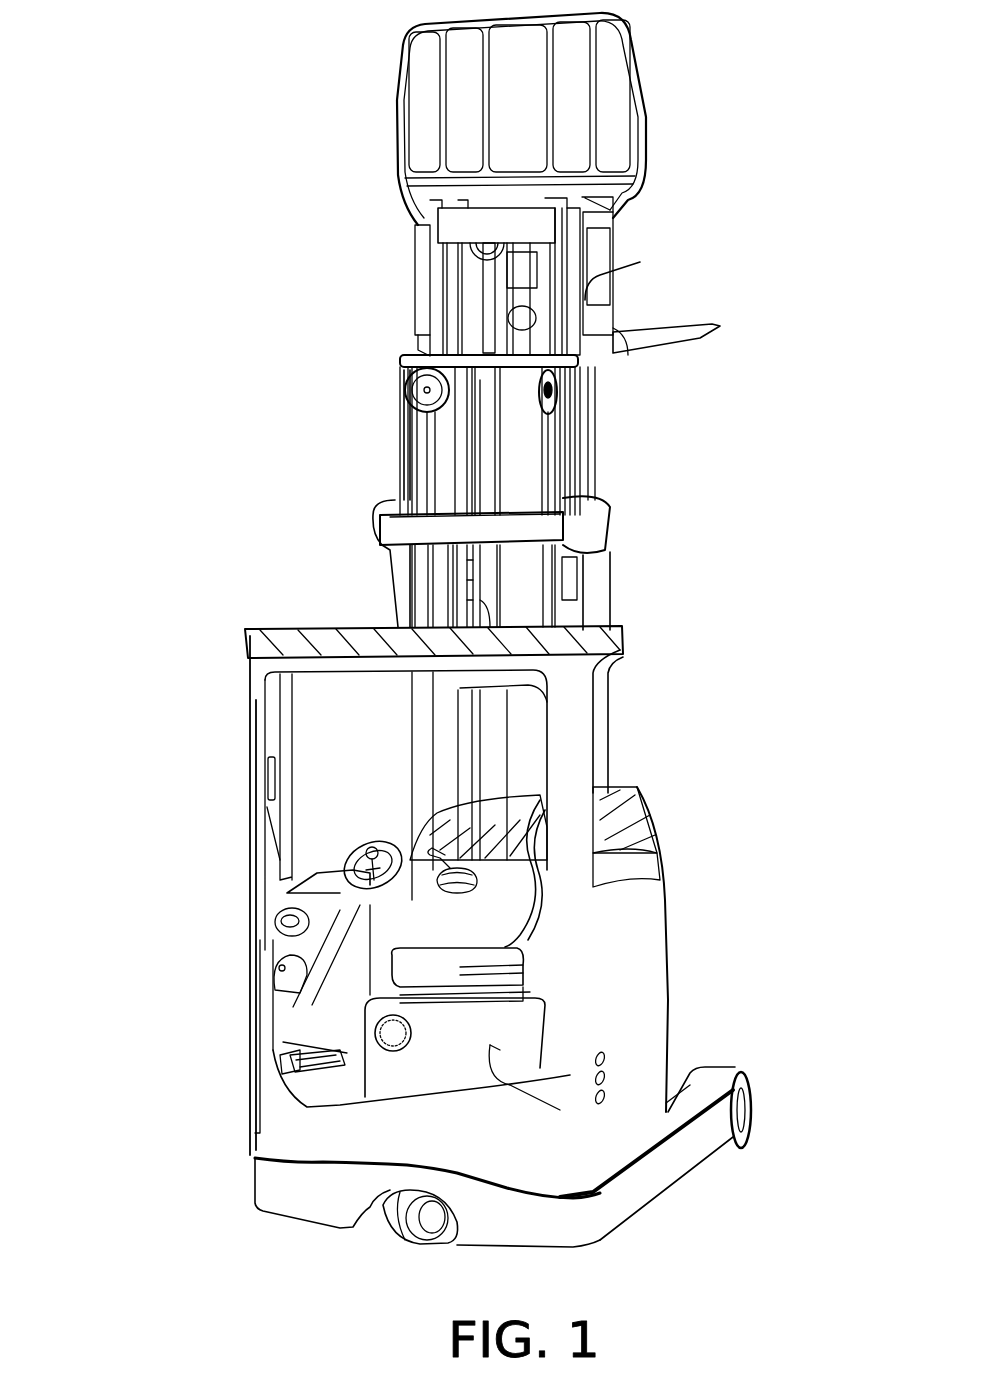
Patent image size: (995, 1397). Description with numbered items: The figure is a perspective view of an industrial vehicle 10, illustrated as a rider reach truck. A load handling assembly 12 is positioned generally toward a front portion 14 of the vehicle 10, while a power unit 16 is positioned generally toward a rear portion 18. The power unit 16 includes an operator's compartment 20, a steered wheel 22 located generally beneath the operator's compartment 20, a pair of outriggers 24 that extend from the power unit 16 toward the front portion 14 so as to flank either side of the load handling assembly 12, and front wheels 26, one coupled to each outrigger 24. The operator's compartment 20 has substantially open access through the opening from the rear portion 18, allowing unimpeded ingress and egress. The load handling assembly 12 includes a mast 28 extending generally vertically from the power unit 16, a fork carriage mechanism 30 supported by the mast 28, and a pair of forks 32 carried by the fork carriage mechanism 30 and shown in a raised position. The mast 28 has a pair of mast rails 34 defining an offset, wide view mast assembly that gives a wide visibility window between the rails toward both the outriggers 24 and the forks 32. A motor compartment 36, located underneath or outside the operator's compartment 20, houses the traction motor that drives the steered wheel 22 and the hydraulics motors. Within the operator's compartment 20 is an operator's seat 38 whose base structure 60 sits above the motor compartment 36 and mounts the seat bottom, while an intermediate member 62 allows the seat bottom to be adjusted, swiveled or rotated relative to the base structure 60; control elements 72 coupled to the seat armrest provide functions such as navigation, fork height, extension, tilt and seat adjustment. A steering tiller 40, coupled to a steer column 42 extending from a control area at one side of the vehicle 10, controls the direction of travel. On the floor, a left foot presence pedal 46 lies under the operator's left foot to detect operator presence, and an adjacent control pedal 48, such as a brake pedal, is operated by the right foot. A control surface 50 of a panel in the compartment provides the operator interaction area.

The industrial vehicle 10 is at (148, 284).
The load handling assembly 12 is at (225, 413).
The front portion 14 is at (733, 818).
The power unit 16 is at (180, 833).
The rear portion 18 is at (361, 1124).
The operator's compartment 20 is at (211, 1107).
The steered wheel 22 is at (400, 1228).
The outriggers 24 is at (677, 1158).
The front wheels 26 is at (753, 1110).
The mast 28 is at (678, 521).
The fork carriage mechanism 30 is at (704, 188).
The forks 32 is at (702, 340).
The mast rails 34 is at (402, 470).
The motor compartment 36 is at (490, 1045).
The operator's seat 38 is at (591, 928).
The steering tiller 40 is at (352, 860).
The steer column 42 is at (340, 893).
The left foot presence pedal 46 is at (292, 1072).
The control pedal 48 is at (322, 1053).
The control surface 50 is at (394, 840).
The base structure 60 is at (458, 1003).
The intermediate member 62 is at (495, 993).
The control elements 72 is at (437, 878).